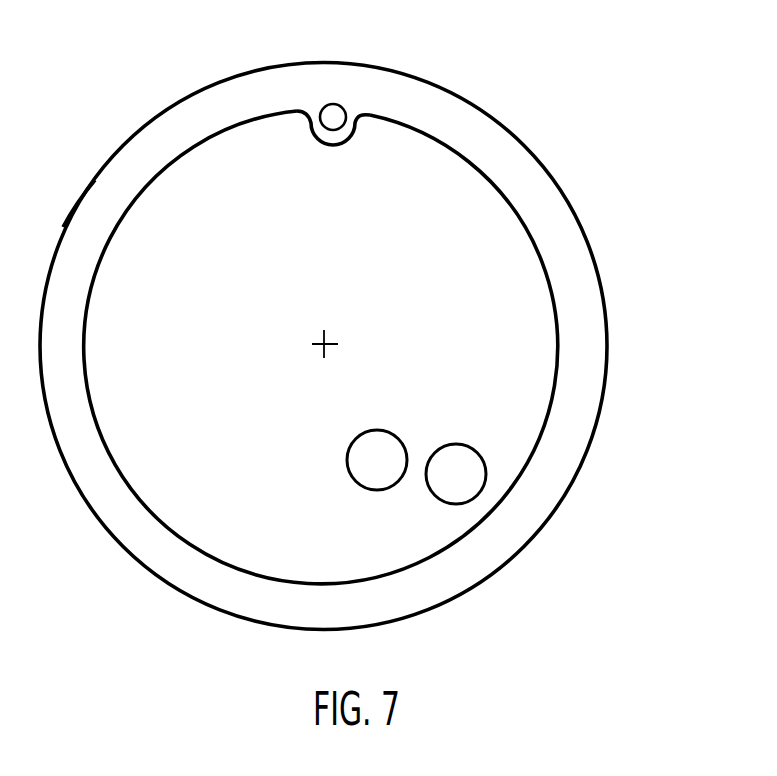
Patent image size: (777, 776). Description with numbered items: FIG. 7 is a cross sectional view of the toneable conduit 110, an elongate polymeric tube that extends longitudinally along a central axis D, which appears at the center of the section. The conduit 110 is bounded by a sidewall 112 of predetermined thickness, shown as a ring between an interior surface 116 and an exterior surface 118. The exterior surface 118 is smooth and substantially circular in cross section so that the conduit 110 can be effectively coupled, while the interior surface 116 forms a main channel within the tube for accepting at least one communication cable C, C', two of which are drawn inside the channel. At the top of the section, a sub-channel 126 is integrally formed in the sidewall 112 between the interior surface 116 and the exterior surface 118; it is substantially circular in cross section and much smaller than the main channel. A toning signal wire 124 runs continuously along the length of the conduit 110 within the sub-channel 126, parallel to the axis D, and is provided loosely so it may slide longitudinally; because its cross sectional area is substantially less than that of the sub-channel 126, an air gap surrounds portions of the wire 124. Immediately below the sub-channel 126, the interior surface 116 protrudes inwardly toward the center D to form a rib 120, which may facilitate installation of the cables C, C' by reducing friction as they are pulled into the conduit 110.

The toneable conduit 110 is at (650, 373).
The sidewall 112 is at (558, 235).
The interior surface 116 is at (110, 443).
The exterior surface 118 is at (63, 227).
The rib 120 is at (332, 146).
The toning signal wire 124 is at (333, 118).
The sub-channel 126 is at (322, 106).
The central longitudinal axis D is at (330, 340).
The communication cable C is at (389, 427).
The communication cable C' is at (474, 440).